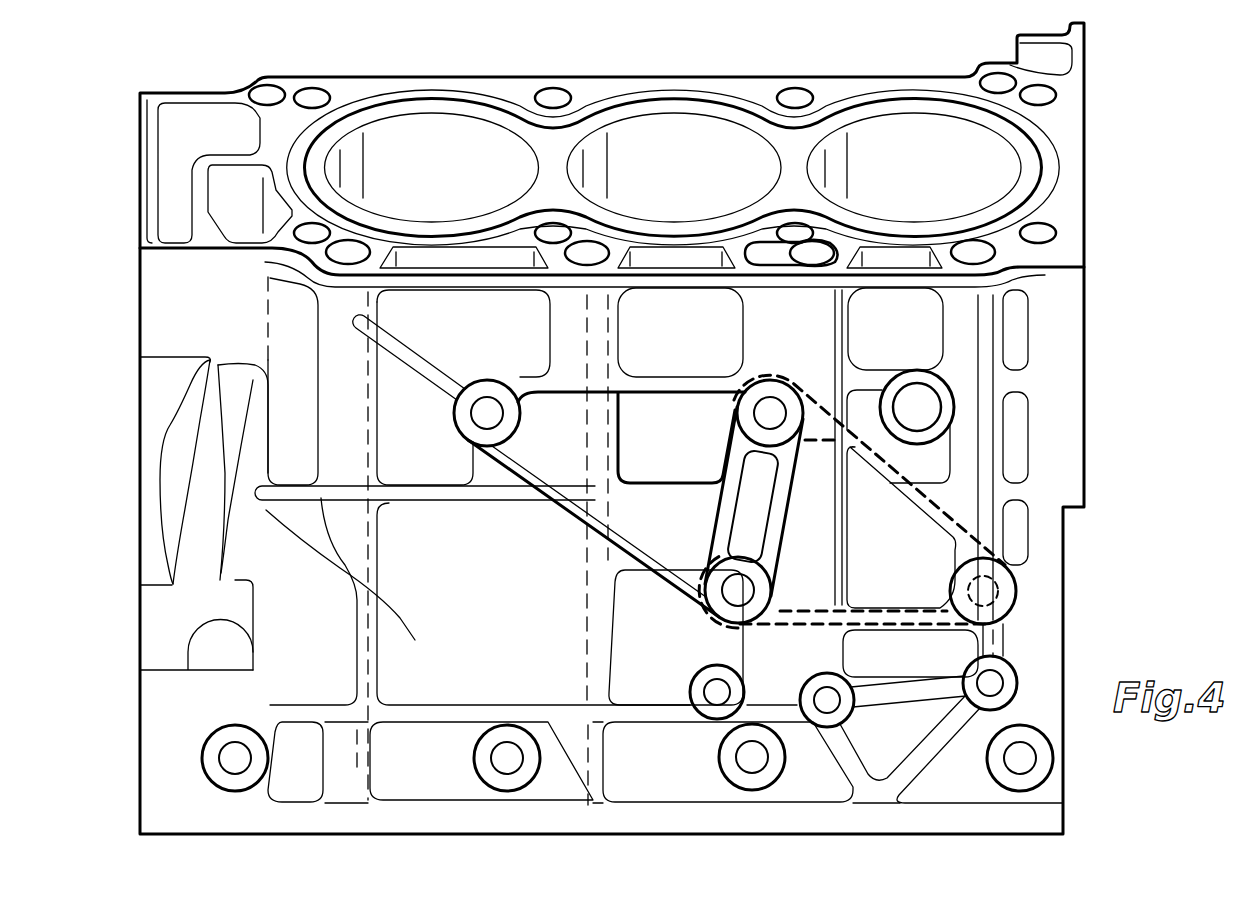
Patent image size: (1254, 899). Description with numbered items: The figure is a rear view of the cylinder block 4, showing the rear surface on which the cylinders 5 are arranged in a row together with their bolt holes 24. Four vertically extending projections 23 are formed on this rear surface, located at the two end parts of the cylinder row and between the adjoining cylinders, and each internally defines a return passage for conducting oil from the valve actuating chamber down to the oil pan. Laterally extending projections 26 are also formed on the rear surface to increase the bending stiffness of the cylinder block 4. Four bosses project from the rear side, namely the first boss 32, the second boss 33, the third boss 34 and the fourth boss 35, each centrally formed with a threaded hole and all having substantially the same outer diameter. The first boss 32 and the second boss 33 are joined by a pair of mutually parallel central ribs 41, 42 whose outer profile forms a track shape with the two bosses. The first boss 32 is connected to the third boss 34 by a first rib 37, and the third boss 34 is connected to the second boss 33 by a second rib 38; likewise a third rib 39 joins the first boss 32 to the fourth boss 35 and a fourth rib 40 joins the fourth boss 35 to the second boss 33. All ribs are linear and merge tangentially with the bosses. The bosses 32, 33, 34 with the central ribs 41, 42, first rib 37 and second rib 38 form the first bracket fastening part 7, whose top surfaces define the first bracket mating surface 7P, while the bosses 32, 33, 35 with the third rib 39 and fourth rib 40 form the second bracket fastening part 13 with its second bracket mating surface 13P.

The cylinder block 4 is at (162, 733).
The cylinder bore 5 is at (328, 172).
The bolt hole 24 is at (352, 258).
The vertically extending projections 23 is at (337, 338).
The first rib 37 is at (653, 390).
The first bracket fastening part 7 is at (527, 480).
The first bracket mating surface 7P is at (470, 432).
The third boss 34 is at (463, 415).
The first boss 32 is at (787, 394).
The second boss 33 is at (703, 590).
The fourth boss 35 is at (1012, 574).
The central rib 41 is at (717, 530).
The central rib 42 is at (780, 513).
The second rib 38 is at (545, 558).
The laterally extending projections 26 is at (895, 357).
The third rib 39 is at (950, 507).
The second bracket fastening part 13 is at (967, 517).
The second bracket mating surface 13P is at (952, 590).
The fourth rib 40 is at (918, 623).